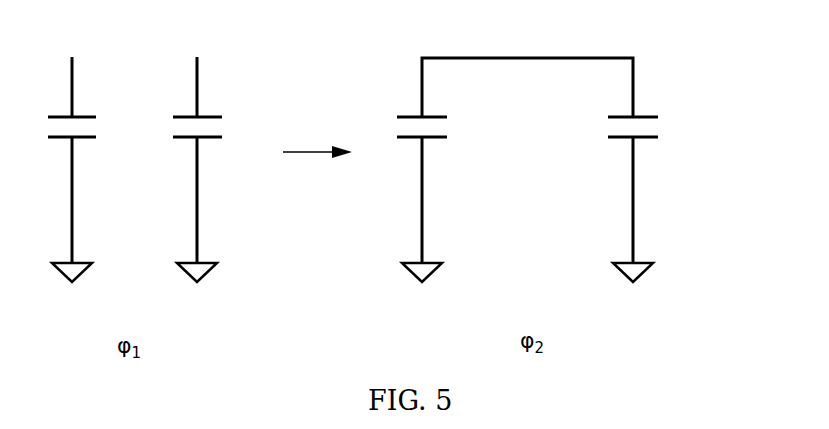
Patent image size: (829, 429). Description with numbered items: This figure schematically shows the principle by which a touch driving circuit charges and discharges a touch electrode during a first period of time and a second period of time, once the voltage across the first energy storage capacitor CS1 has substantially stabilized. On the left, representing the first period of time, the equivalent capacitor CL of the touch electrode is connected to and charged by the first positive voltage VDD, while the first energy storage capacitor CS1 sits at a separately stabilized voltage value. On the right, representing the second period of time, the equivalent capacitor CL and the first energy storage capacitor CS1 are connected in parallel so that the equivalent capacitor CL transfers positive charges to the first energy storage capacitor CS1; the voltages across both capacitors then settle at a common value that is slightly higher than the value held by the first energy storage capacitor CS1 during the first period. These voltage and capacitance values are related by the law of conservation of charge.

The first positive voltage VDD is at (73, 65).
The equivalent capacitor of the touch electrode CL is at (86, 199).
The first energy storage capacitor CS1 is at (215, 199).